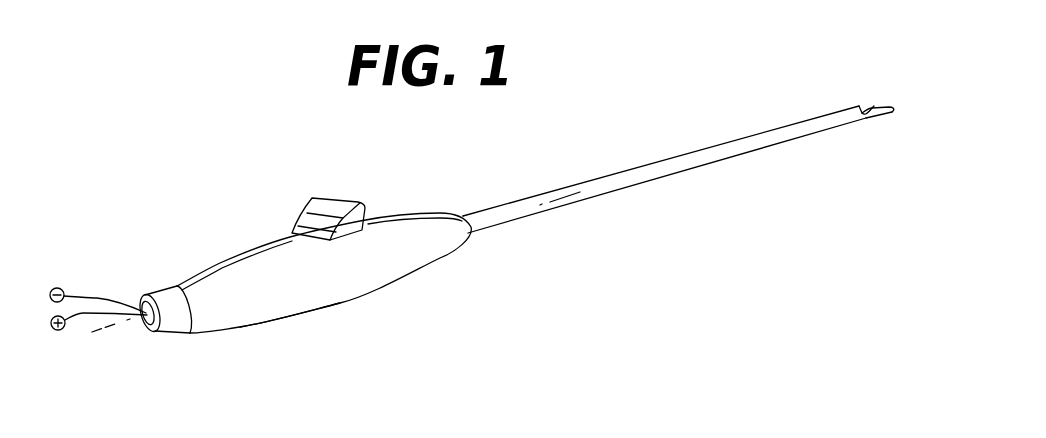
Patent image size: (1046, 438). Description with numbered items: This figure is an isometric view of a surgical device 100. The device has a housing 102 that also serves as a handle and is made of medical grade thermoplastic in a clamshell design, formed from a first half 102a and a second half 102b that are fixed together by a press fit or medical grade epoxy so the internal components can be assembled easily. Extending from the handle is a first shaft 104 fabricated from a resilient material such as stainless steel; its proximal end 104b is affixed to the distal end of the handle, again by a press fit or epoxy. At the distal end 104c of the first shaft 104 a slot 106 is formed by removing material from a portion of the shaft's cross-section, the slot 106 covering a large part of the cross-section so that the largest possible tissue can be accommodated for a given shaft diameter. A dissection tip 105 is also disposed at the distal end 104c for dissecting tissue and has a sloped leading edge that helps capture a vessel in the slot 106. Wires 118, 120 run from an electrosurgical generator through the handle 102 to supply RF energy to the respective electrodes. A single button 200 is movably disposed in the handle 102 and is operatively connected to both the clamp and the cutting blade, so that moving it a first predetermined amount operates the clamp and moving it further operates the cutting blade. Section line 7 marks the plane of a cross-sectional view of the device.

The surgical device 100 is at (300, 169).
The housing 102 is at (373, 298).
The first half 102a is at (287, 292).
The second half 102b is at (228, 258).
The first shaft 104 is at (667, 158).
The proximal end 104b is at (460, 217).
The distal end 104c is at (867, 120).
The dissection tip 105 is at (888, 103).
The slot 106 is at (860, 103).
The wire 118 is at (97, 297).
The wire 120 is at (83, 315).
The button 200 is at (342, 200).
The section line 7- 7 is at (100, 328).